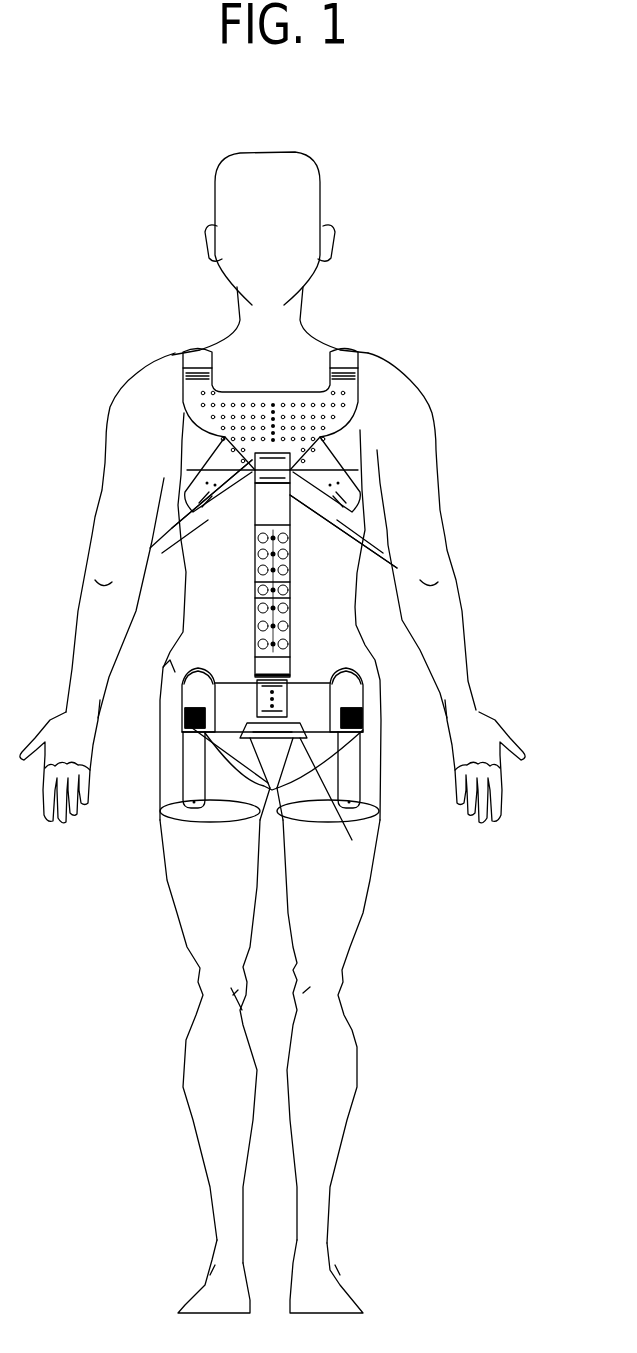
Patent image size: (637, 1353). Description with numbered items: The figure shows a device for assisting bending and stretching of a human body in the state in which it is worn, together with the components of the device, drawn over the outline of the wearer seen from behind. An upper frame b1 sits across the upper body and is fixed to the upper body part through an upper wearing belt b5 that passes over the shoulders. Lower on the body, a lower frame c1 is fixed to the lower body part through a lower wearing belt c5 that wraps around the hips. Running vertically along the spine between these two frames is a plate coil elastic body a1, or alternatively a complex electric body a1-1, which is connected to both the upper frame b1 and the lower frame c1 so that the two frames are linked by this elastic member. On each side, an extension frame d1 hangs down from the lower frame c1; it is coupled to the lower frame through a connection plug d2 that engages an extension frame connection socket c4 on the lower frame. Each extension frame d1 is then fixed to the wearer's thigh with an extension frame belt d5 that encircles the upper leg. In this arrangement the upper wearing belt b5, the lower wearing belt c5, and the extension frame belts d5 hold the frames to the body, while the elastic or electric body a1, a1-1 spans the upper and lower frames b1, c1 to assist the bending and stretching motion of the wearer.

The upper wearing belt b5 is at (358, 352).
The upper frame b1 is at (322, 437).
The plate coil elastic body a1 is at (290, 495).
The complex electric body a1-1 is at (382, 567).
The lower frame c1 is at (303, 693).
The connection plug d2 is at (350, 713).
The extension frame connection socket c4 is at (485, 667).
The extension frame d1 is at (353, 763).
The lower wearing belt c5 is at (293, 747).
The extension frame belt d5 is at (333, 817).